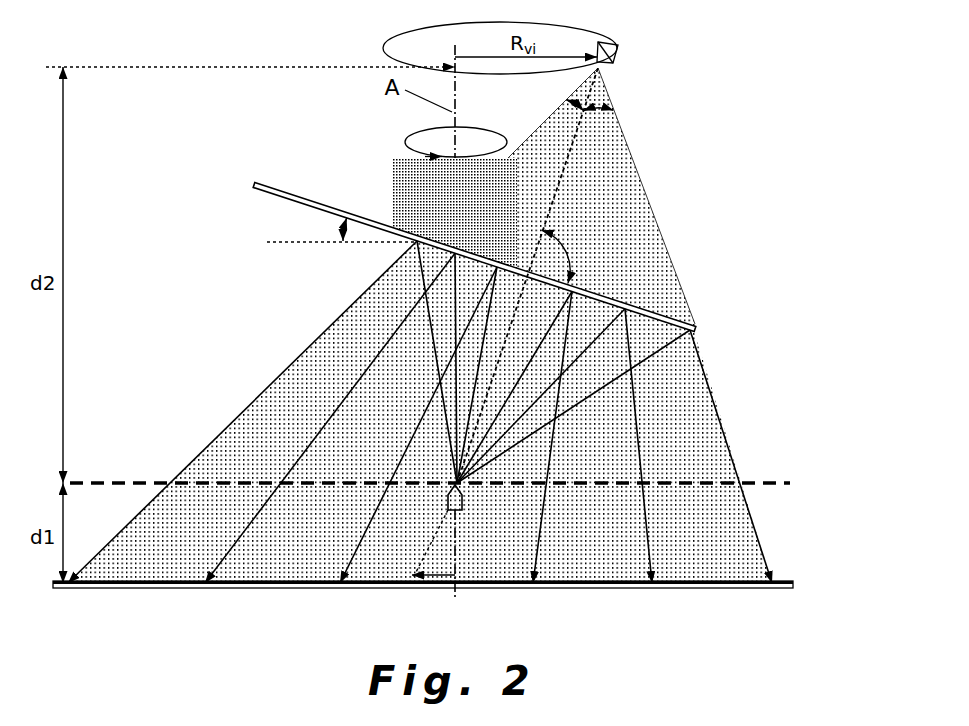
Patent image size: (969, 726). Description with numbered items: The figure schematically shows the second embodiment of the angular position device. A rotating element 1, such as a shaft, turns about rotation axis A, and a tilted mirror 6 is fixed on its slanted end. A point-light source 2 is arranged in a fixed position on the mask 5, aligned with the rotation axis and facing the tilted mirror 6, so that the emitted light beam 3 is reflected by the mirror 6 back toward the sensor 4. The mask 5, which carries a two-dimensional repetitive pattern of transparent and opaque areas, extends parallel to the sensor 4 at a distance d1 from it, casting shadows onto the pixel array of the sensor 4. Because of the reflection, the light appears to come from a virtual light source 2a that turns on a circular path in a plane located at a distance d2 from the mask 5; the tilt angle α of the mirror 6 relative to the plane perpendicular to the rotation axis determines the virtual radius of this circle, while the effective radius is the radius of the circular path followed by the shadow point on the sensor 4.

The rotating element 1 is at (402, 178).
The light source 2 is at (458, 500).
The virtual light source 2a is at (607, 50).
The light beam 3 is at (315, 353).
The sensor 4 is at (597, 585).
The mask 5 is at (762, 473).
The mirror 6 is at (268, 178).